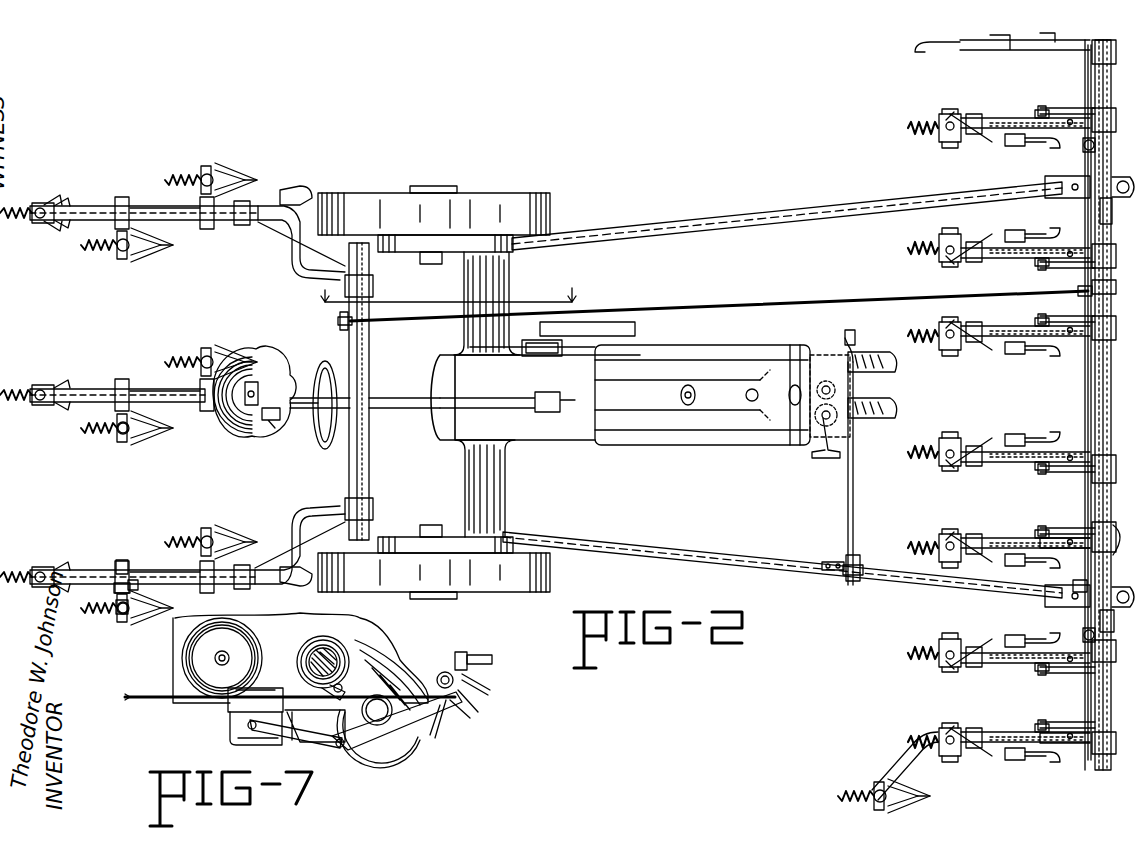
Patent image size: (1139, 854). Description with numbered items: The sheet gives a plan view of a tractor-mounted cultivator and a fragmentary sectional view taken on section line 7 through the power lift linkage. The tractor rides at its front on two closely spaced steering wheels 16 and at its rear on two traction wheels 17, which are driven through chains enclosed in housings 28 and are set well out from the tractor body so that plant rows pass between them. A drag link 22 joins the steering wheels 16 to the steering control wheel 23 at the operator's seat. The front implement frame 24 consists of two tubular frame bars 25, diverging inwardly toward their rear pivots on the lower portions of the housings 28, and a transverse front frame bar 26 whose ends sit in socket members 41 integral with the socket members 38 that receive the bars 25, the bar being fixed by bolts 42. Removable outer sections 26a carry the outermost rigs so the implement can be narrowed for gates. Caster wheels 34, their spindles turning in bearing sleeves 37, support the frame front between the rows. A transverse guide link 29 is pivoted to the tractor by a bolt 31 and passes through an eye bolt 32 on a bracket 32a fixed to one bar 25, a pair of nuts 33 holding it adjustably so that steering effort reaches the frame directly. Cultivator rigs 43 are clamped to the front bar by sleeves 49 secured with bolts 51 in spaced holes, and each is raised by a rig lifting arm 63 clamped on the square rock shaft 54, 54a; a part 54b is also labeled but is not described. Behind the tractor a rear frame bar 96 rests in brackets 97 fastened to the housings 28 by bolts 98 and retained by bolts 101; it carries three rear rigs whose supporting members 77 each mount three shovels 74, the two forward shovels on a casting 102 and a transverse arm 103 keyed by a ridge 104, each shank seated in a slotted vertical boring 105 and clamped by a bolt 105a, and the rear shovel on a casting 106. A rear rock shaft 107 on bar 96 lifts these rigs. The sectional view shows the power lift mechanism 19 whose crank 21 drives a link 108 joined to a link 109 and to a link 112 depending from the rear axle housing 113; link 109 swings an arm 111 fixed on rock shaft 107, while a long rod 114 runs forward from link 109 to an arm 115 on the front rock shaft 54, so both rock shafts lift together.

In FIG. 2, the section line 7 is at (448, 291).
In FIG. 2, the steering wheels 16 is at (880, 410).
In FIG. 2, the traction wheels 17 is at (522, 202).
In FIG. 7, the power lift mechanism 19 is at (236, 718).
In FIG. 7, the crank 21 is at (280, 718).
In FIG. 2, the drag link 22 is at (750, 448).
In FIG. 2, the steering control wheel 23 is at (314, 432).
In FIG. 2, the front implement frame 24 is at (918, 594).
In FIG. 2, the frame bars 25 is at (736, 214).
In FIG. 2, the transverse front frame bar 26 is at (1096, 378).
In FIG. 2, the outer sections 26a is at (1095, 94).
In FIG. 2, the housings 28 is at (420, 253).
In FIG. 7, the housings 28 is at (386, 661).
In FIG. 2, the transverse guide link 29 is at (848, 471).
In FIG. 2, the bolt 31 is at (855, 353).
In FIG. 2, the eye bolt 32 is at (850, 578).
In FIG. 2, the bracket 32a is at (830, 572).
In FIG. 2, the nuts 33 is at (860, 568).
In FIG. 2, the caster wheels 34 is at (1046, 182).
In FIG. 2, the bearing sleeve 37 is at (1112, 628).
In FIG. 2, the socket members 38 is at (1078, 586).
In FIG. 2, the socket member 41 is at (1100, 198).
In FIG. 2, the bolts 42 is at (1100, 213).
In FIG. 2, the cultivator rigs 43 is at (950, 104).
In FIG. 2, the sleeve 49 is at (1095, 456).
In FIG. 2, the bolts 51 is at (1124, 518).
In FIG. 2, the rock shaft 54 is at (1092, 338).
In FIG. 2, the rock shaft outer section 54a is at (1084, 66).
In FIG. 2, the lever 54b is at (1083, 146).
In FIG. 2, the rig lifting arm 63 is at (1046, 534).
In FIG. 2, the shovels 74 is at (222, 172).
In FIG. 2, the supporting member 77 is at (150, 207).
In FIG. 2, the rear frame bar 96 is at (370, 452).
In FIG. 7, the brackets 97 is at (462, 708).
In FIG. 7, the bolts 98 is at (445, 735).
In FIG. 7, the bolts 101 is at (440, 676).
In FIG. 2, the casting 102 is at (118, 564).
In FIG. 2, the arm 103 is at (116, 588).
In FIG. 2, the ridge 104 is at (138, 586).
In FIG. 2, the slotted vertical boring 105 is at (120, 435).
In FIG. 2, the bolt 105a is at (116, 610).
In FIG. 2, the casting 106 is at (52, 222).
In FIG. 2, the rear rock shaft 107 is at (340, 316).
In FIG. 7, the rear rock shaft 107 is at (458, 654).
In FIG. 7, the link 108 is at (330, 738).
In FIG. 7, the link 109 is at (396, 745).
In FIG. 7, the arm 111 is at (470, 682).
In FIG. 7, the link 112 is at (352, 754).
In FIG. 2, the rear axle housing 113 is at (508, 278).
In FIG. 7, the rear axle housing 113 is at (334, 645).
In FIG. 2, the long link or rod 114 is at (708, 294).
In FIG. 7, the long link or rod 114 is at (146, 701).
In FIG. 2, the arm 115 is at (1080, 288).